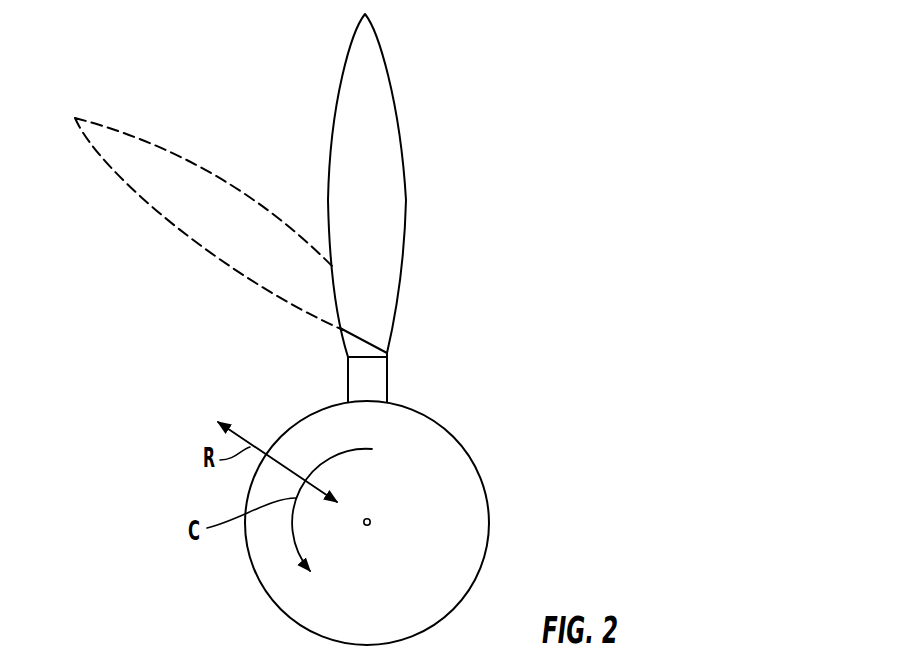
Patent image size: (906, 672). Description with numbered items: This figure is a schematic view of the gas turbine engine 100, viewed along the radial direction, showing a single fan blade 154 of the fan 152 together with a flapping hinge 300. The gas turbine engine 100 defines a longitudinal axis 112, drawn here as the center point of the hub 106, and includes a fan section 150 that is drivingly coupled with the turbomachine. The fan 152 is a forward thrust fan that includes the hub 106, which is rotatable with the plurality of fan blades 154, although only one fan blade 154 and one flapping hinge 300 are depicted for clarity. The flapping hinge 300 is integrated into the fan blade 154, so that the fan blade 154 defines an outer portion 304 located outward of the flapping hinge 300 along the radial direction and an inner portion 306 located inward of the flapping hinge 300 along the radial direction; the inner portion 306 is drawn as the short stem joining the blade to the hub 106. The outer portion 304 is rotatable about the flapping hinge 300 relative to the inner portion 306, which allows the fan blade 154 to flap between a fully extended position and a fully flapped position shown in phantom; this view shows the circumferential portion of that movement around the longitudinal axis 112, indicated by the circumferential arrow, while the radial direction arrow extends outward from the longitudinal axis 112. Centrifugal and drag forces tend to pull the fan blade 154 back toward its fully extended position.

The gas turbine engine 100 is at (626, 67).
The fan section 150 is at (419, 327).
The fan 152 is at (588, 238).
The fan blade 154 is at (278, 185).
The outer portion 304 is at (388, 203).
The flapping hinge 300 is at (360, 337).
The inner portion 306 is at (353, 343).
The hub 106 is at (450, 460).
The longitudinal axis 112 is at (371, 522).